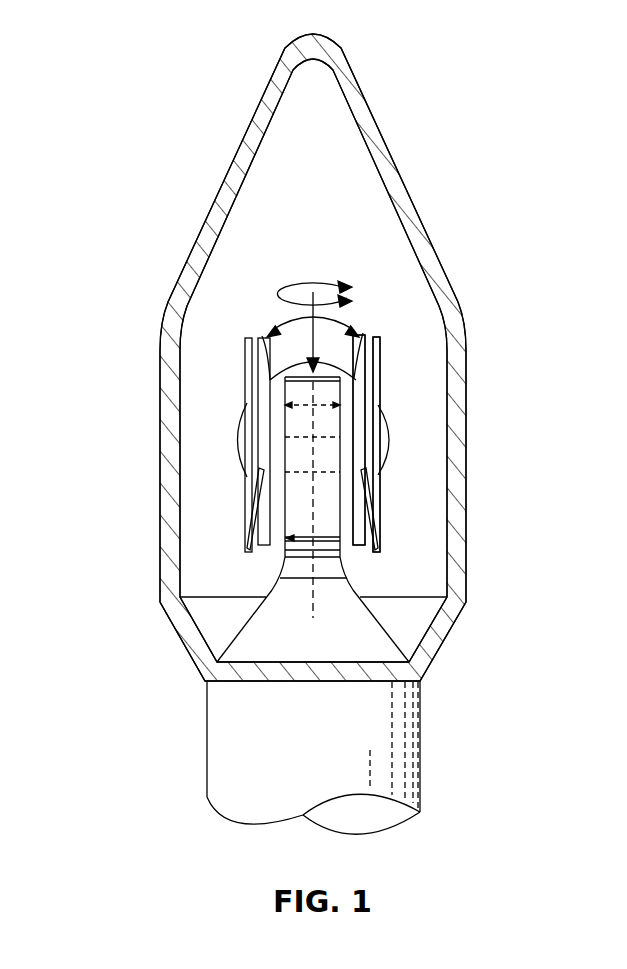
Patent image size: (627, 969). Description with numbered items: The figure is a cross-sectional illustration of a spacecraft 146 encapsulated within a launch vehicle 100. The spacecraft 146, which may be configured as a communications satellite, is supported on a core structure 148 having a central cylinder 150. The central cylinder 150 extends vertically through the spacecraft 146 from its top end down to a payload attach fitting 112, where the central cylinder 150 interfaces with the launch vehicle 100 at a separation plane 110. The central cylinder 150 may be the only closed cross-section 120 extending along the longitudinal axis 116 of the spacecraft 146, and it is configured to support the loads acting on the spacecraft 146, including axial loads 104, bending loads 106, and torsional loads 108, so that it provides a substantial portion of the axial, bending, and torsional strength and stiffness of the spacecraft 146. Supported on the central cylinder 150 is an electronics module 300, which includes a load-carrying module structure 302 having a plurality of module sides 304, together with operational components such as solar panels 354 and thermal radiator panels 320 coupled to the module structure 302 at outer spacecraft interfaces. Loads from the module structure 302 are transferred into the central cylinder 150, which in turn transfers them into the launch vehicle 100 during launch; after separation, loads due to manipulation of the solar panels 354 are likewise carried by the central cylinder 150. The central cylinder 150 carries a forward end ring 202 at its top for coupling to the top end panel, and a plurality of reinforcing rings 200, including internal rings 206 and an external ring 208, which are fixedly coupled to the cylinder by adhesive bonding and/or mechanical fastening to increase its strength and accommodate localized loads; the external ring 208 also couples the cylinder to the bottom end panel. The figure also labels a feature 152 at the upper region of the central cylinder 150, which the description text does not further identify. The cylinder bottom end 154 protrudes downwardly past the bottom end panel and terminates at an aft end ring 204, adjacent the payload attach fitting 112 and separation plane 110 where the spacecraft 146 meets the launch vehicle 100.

The launch vehicle 100 is at (207, 757).
The axial loads 104 is at (306, 357).
The bending loads 106 is at (271, 327).
The torsional loads 108 is at (277, 293).
The separation plane 110 is at (275, 580).
The payload attach fitting 112 is at (283, 567).
The longitudinal axis 116 is at (312, 453).
The closed cross-section 120 is at (292, 421).
The spacecraft 146 is at (390, 440).
The core structure 148 is at (365, 470).
The central cylinder 150 is at (345, 502).
The top plate 152 is at (353, 377).
The cylinder bottom end 154 is at (340, 558).
The reinforcing rings 200 is at (286, 402).
The forward end ring 202 is at (347, 370).
The aft end ring 204 is at (340, 557).
The internal rings 206 is at (381, 405).
The external ring 208 is at (288, 538).
The electronics module 300 is at (309, 388).
The module structure 302 is at (358, 352).
The module sides 304 is at (262, 378).
The thermal radiator panels 320 is at (261, 493).
The solar panels 354 is at (370, 343).